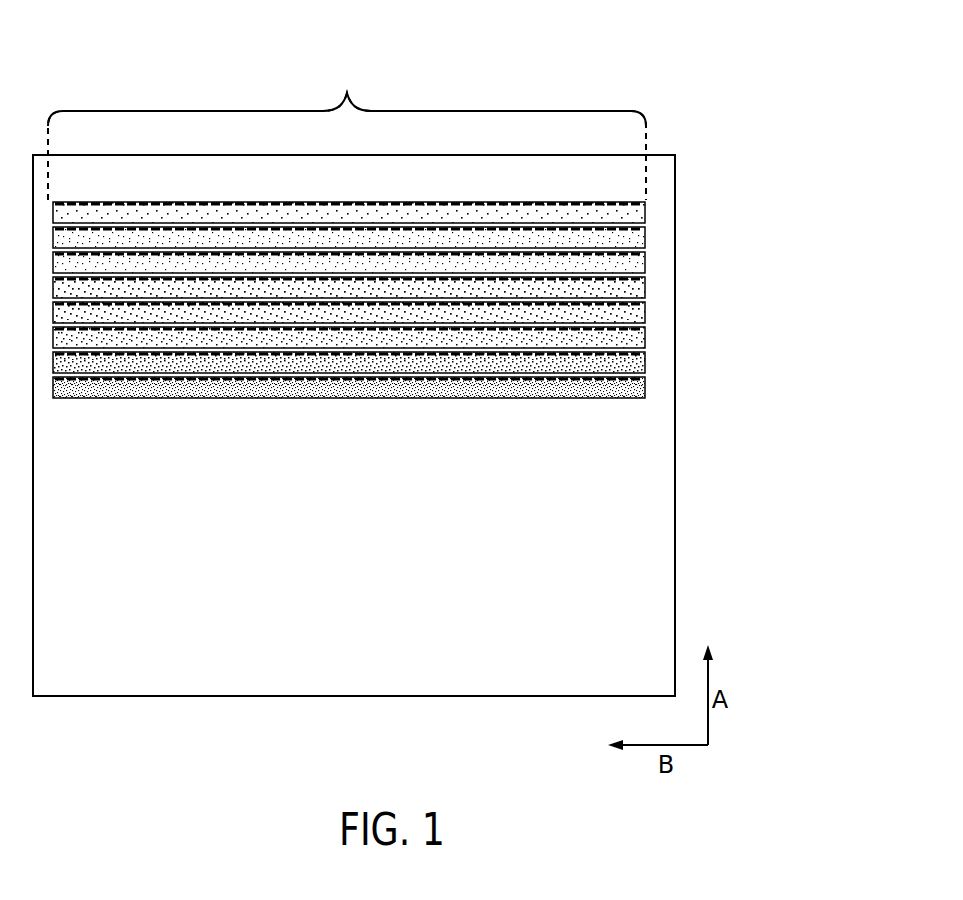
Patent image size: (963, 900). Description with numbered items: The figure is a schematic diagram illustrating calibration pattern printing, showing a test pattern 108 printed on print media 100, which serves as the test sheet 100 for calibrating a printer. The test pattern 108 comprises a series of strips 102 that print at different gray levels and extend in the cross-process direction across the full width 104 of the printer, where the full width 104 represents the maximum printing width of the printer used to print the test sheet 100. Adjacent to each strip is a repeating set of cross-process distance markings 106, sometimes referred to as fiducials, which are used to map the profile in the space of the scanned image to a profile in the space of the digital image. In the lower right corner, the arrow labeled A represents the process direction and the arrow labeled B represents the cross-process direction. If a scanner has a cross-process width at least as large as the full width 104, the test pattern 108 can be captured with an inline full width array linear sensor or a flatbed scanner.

The print media 100 is at (233, 696).
The strips 102 is at (648, 240).
The full width 104 is at (347, 216).
The cross-process distance markings 106 is at (565, 200).
The test pattern 108 is at (397, 400).